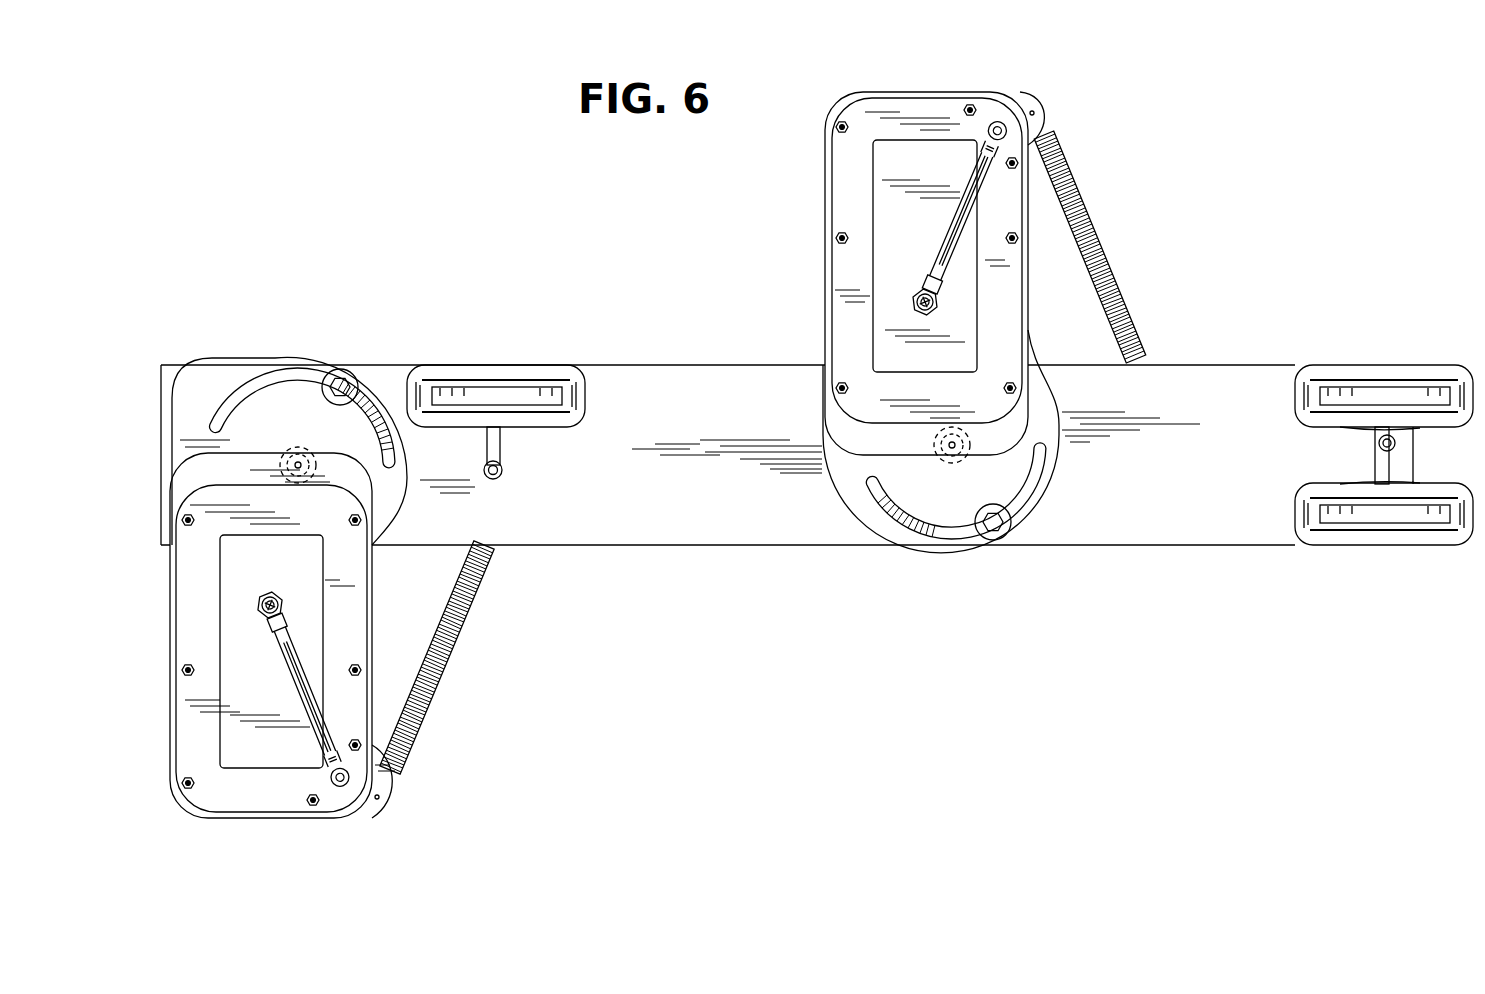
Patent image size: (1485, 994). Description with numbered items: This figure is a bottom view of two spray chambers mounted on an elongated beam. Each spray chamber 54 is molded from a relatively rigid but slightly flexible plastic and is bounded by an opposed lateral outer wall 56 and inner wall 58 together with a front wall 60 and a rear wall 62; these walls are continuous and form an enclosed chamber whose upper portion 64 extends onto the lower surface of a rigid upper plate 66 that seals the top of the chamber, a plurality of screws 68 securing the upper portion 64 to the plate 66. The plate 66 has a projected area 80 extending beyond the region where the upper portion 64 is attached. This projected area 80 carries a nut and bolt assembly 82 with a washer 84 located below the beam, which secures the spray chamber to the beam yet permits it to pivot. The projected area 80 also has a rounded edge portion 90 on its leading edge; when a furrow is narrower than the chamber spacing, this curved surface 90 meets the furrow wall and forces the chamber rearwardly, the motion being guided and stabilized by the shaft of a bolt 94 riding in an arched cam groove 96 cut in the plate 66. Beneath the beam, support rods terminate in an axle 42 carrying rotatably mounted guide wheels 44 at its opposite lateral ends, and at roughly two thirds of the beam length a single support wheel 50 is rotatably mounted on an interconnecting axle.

The axle 42 is at (1373, 455).
The guide wheels 44 is at (1380, 374).
The support wheel 50 is at (485, 388).
The spray chamber 54 is at (652, 455).
The outer wall 56 is at (293, 818).
The inner wall 58 is at (250, 453).
The front wall 60 is at (372, 623).
The rear wall 62 is at (168, 600).
The upper portion of the spray chamber 64 is at (183, 593).
The upper plate 66 is at (244, 701).
The screws 68 is at (195, 520).
The projected area 80 is at (190, 412).
The nut and bolt assembly 82 is at (290, 436).
The washer 84 is at (300, 448).
The rounded edge portion 90 is at (396, 797).
The bolt 94 is at (341, 370).
The cam groove 96 is at (298, 374).